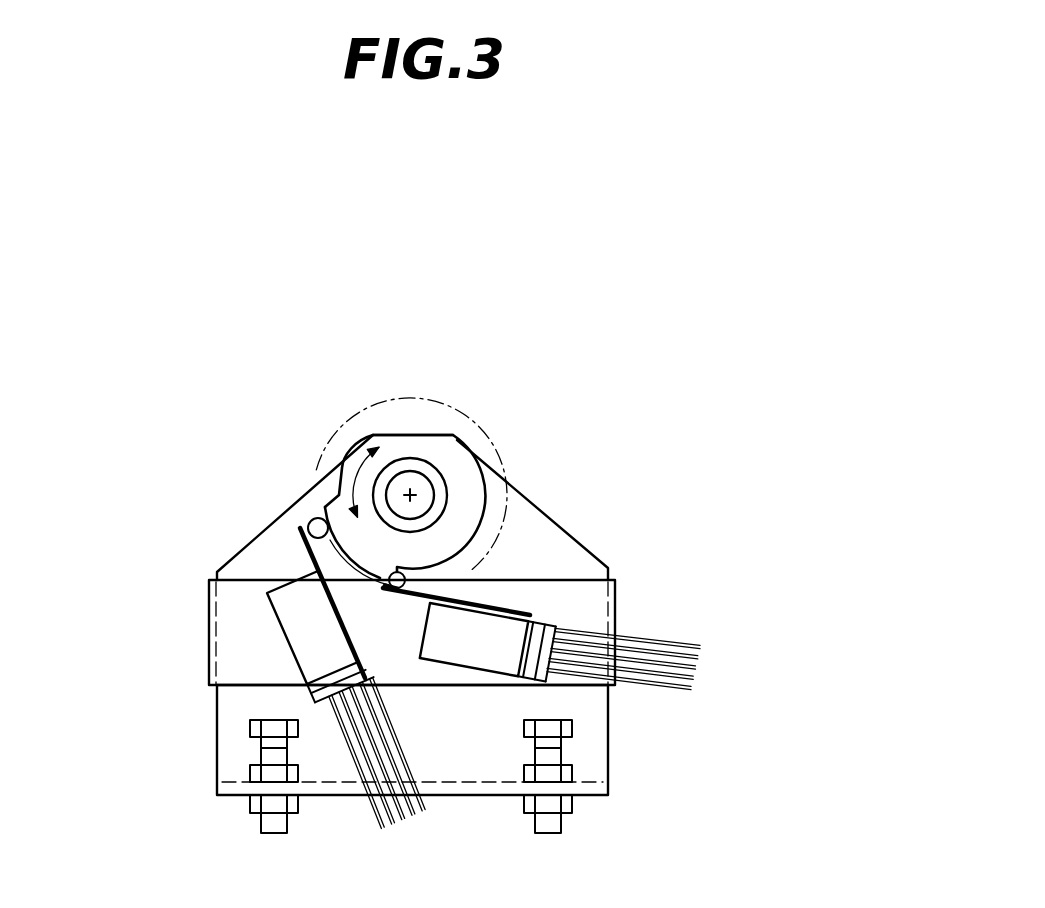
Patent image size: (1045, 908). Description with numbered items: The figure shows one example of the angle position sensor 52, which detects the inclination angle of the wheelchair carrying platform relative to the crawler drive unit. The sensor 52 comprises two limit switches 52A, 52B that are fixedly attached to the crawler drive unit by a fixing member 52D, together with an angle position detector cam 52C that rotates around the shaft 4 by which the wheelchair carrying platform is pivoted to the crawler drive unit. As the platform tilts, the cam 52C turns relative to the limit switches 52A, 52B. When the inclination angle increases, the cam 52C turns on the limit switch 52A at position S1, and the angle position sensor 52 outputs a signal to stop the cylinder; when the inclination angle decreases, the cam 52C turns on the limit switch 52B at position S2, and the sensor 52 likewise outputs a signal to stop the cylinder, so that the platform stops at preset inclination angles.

The angle position sensor 52 is at (553, 347).
The shaft 4 is at (422, 480).
The angle position detector cam 52C is at (450, 460).
The position S1 is at (320, 518).
The position S2 is at (398, 572).
The limit switch 52A is at (282, 635).
The limit switch 52B is at (502, 617).
The fixing member 52D is at (608, 752).